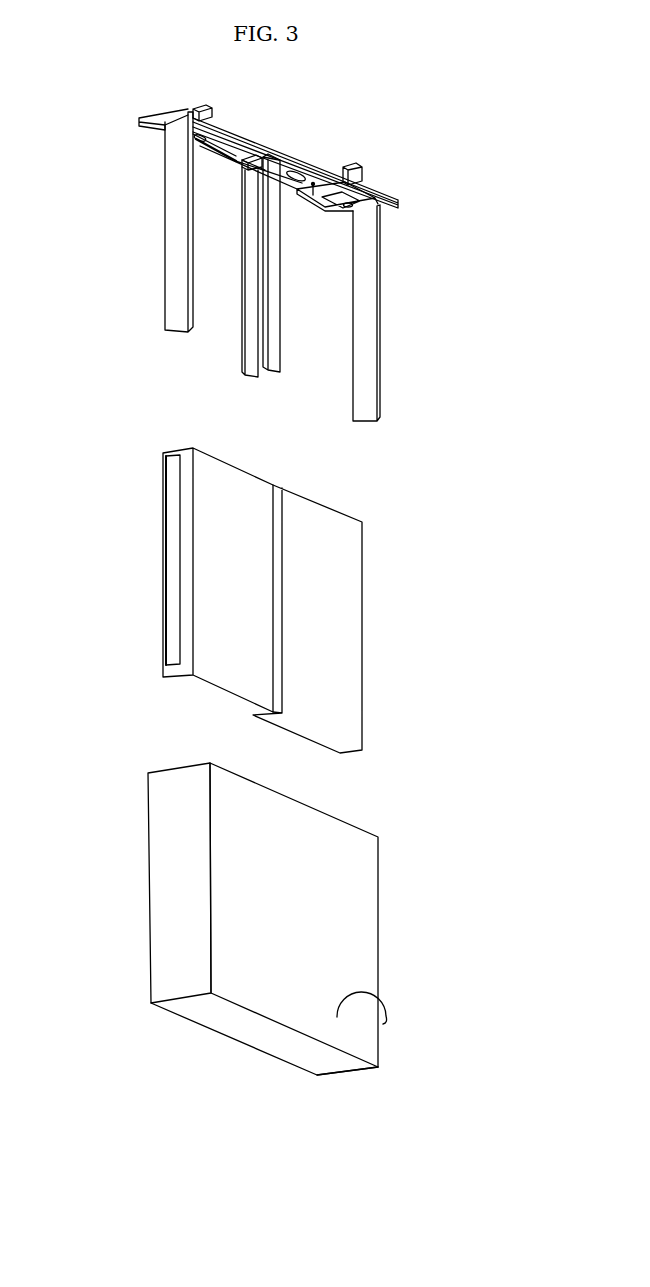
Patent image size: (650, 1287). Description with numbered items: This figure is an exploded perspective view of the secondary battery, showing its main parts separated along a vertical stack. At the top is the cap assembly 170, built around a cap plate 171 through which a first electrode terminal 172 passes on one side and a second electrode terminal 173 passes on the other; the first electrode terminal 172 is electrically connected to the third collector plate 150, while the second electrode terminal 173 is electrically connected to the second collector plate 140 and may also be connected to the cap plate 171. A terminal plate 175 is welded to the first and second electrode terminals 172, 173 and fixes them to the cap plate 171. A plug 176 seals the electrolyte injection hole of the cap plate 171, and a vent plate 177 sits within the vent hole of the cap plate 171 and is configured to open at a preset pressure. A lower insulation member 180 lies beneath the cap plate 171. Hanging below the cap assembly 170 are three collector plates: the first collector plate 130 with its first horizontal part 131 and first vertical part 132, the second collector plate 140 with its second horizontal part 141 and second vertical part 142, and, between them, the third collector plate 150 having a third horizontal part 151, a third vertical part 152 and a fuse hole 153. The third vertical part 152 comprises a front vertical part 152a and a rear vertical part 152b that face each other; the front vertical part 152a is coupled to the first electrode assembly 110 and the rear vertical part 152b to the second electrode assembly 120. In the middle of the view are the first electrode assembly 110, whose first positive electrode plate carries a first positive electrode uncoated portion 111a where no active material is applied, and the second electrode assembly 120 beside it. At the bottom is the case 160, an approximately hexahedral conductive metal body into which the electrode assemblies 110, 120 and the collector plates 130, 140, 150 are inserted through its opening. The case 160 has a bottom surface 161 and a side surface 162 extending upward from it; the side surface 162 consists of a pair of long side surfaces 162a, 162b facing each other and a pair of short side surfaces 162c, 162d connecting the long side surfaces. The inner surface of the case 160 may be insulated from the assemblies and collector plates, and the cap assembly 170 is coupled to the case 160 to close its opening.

The first electrode assembly 110 is at (175, 601).
The first positive electrode uncoated portion 111a is at (173, 557).
The second electrode assembly 120 is at (322, 722).
The first collector plate 130 is at (117, 217).
The first horizontal part 131 is at (152, 114).
The first vertical part 132 is at (92, 107).
The second collector plate 140 is at (398, 301).
The second horizontal part 141 is at (370, 219).
The second vertical part 142 is at (447, 233).
The third collector plate 150 is at (265, 267).
The third horizontal part 151 is at (230, 150).
The third vertical part 152 is at (255, 311).
The front vertical part 152a is at (284, 289).
The rear vertical part 152b is at (250, 372).
The fuse hole 153 is at (255, 170).
The case 160 is at (307, 964).
The bottom surface 161 is at (352, 1065).
The side surface 162 is at (259, 964).
The long side surface 162a is at (268, 1000).
The long side surface 162b is at (202, 1030).
The short side surface 162c is at (349, 1055).
The short side surface 162d is at (180, 985).
The cap assembly 170 is at (307, 149).
The cap plate 171 is at (345, 168).
The first electrode terminal 172 is at (200, 142).
The second electrode terminal 173 is at (348, 209).
The terminal plate 175 is at (188, 107).
The plug 176 is at (313, 195).
The vent plate 177 is at (298, 172).
The lower insulation member 180 is at (263, 152).